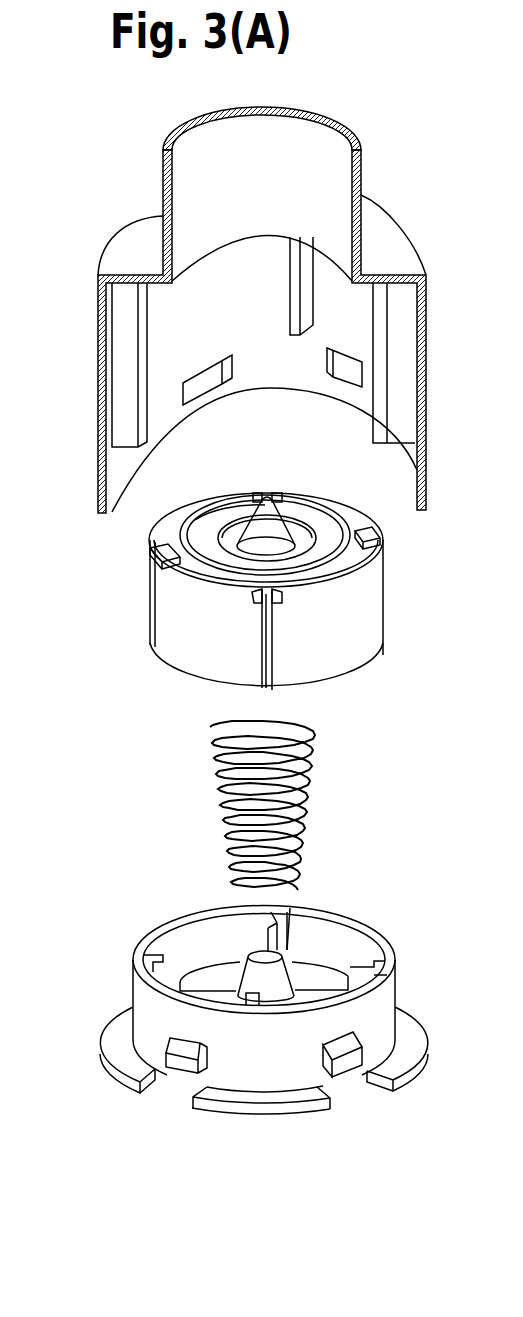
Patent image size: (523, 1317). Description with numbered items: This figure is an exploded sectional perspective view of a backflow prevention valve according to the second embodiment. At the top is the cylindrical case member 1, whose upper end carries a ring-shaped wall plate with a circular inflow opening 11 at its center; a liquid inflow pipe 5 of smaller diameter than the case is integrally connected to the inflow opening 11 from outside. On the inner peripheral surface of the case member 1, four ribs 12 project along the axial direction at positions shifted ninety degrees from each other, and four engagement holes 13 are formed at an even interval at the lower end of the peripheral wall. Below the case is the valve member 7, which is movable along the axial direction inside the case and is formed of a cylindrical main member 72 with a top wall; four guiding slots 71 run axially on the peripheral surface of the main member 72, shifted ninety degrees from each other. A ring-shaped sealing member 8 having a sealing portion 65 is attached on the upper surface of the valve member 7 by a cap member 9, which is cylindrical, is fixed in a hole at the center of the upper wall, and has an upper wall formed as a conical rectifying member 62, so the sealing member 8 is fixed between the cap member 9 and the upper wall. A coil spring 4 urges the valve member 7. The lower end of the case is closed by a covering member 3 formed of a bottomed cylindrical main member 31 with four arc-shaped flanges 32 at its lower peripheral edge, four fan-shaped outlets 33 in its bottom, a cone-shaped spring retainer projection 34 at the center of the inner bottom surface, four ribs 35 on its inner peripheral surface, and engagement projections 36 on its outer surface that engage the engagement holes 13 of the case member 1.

The case member 1 is at (286, 292).
The liquid inflow pipe 5 is at (360, 162).
The inflow opening 11 is at (220, 243).
The ribs 12 is at (307, 262).
The engagement holes 13 is at (193, 382).
The valve member 7 is at (256, 568).
The sealing member 8 is at (213, 525).
The cap member 9 is at (303, 533).
The conical rectifying member 62 is at (267, 497).
The sealing portion 65 is at (180, 535).
The guiding slots 71 is at (277, 500).
The cylindrical main member 72 is at (200, 645).
The coil spring 4 is at (307, 797).
The covering member 3 is at (269, 1001).
The cylindrical main member 31 is at (143, 1010).
The arc-shaped flanges 32 is at (115, 1048).
The fan-shaped outlets 33 is at (220, 970).
The spring retainer projection 34 is at (265, 955).
The ribs 35 is at (272, 928).
The engagement projections 36 is at (160, 1057).